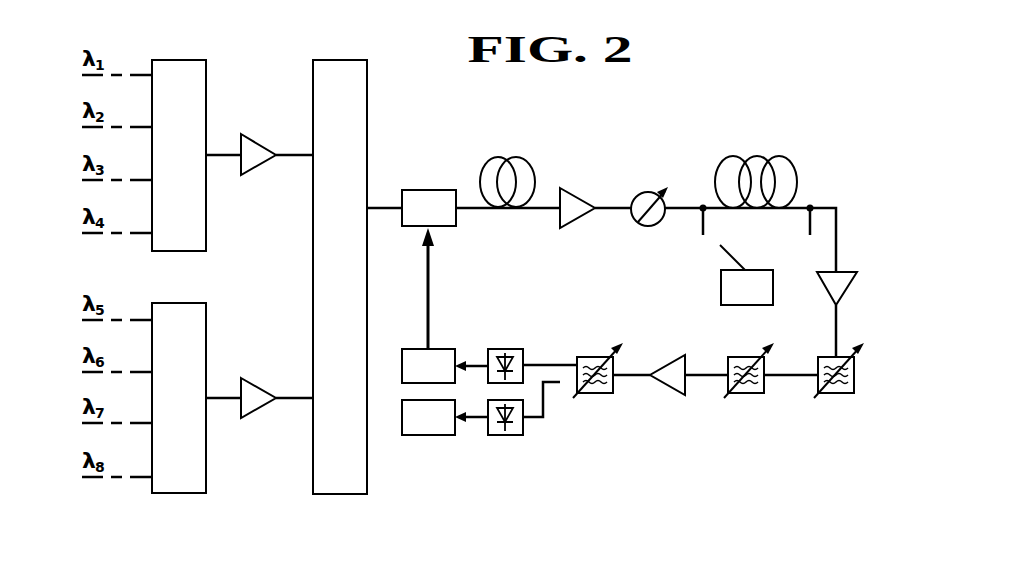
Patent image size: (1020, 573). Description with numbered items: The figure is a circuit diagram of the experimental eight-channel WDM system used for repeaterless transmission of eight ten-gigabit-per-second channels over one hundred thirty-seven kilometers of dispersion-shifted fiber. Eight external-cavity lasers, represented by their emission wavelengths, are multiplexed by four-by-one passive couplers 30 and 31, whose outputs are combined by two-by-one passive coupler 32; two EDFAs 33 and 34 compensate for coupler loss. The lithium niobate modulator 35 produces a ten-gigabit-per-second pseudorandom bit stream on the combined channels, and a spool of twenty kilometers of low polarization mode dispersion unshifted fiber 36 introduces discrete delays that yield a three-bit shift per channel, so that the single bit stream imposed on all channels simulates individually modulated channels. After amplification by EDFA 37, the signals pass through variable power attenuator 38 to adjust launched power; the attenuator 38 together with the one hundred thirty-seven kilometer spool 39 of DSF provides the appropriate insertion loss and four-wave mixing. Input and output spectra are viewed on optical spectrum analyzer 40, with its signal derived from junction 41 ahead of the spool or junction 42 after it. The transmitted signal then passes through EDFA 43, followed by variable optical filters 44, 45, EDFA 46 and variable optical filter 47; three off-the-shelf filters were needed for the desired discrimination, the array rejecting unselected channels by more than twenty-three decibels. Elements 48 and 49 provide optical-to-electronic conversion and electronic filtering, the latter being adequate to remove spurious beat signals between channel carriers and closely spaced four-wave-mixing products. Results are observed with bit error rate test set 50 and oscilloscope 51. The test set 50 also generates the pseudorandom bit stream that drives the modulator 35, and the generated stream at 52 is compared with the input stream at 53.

The 4×1 passive coupler 30 is at (181, 66).
The 4×1 passive coupler 31 is at (176, 314).
The 2×1 passive coupler 32 is at (313, 247).
The EDFA 33 is at (257, 134).
The EDFA 34 is at (248, 378).
The LiNbO3 modulator 35 is at (430, 190).
The unshifted fiber 36 is at (535, 170).
The EDFA 37 is at (561, 229).
The variable power attenuator 38 is at (652, 189).
The spool of DSF 39 is at (797, 172).
The optical spectrum analyzer 40 is at (721, 288).
The junction 41 is at (702, 207).
The junction 42 is at (815, 206).
The EDFA 43 is at (828, 301).
The variable optical filter 44 is at (832, 395).
The variable optical filter 45 is at (742, 395).
The EDFA 46 is at (679, 395).
The variable optical filter 47 is at (598, 357).
The optical-to-electronic converter 48 is at (508, 349).
The optical-to-electronic converter 49 is at (515, 435).
The bit error rate test set 50 is at (440, 349).
The oscilloscope 51 is at (425, 435).
The generated stream 52 is at (425, 254).
The input stream 53 is at (458, 352).